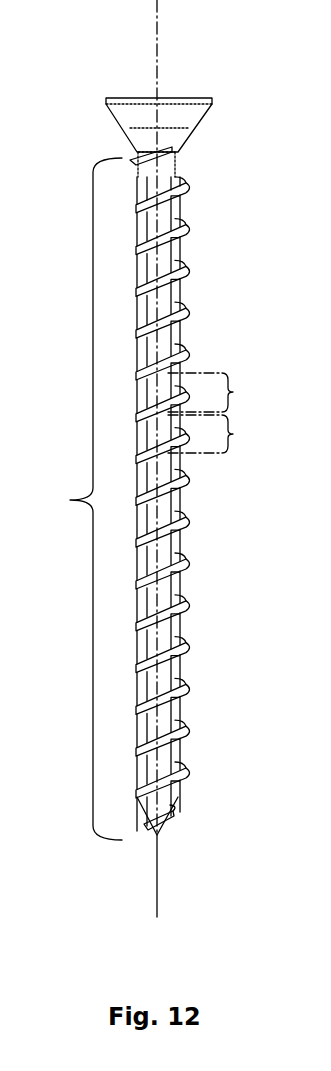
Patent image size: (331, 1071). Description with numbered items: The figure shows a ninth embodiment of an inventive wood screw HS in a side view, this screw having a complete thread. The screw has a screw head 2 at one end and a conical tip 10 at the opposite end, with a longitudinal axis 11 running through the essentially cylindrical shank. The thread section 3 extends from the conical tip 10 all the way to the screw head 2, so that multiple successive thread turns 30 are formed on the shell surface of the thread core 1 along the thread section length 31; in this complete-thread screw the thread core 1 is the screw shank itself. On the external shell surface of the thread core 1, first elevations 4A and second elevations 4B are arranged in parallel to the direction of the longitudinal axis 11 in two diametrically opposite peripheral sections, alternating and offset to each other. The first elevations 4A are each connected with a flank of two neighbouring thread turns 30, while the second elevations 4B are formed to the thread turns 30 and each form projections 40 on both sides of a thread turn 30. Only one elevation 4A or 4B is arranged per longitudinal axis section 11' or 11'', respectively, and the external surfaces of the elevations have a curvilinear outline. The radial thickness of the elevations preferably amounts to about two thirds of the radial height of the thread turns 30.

The longitudinal axis 11 is at (154, 458).
The screw head 2 is at (167, 117).
The thread core 1 is at (165, 175).
The thread section 3 is at (180, 352).
The longitudinal axis section 11'' is at (230, 392).
The longitudinal axis section 11' is at (226, 434).
The second elevation 4B is at (178, 495).
The projection 40 is at (175, 576).
The thread turn 30 is at (168, 610).
The first elevation 4A is at (138, 683).
The conical tip 10 is at (150, 822).
The thread section length 31 is at (75, 499).
The wood screw HS is at (80, 852).